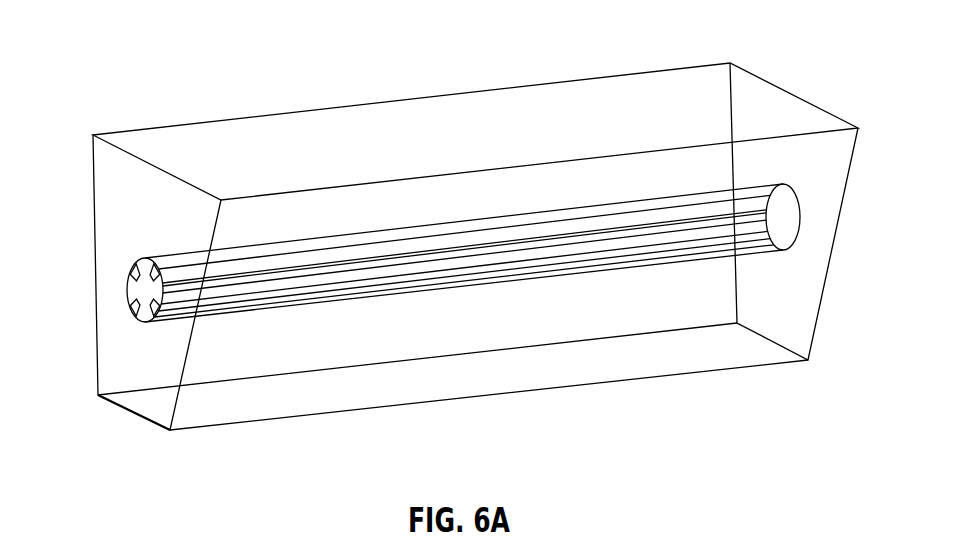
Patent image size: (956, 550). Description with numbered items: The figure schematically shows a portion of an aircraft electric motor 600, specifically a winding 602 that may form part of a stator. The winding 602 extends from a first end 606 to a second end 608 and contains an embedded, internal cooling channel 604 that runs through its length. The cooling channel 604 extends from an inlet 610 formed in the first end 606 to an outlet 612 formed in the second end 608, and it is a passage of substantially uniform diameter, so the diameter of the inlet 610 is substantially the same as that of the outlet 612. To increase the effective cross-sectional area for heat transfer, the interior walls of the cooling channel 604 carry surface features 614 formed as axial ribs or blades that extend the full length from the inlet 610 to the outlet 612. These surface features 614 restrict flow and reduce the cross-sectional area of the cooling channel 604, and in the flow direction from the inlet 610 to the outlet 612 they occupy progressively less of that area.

The aircraft electric motor 600 is at (145, 43).
The winding 602 is at (515, 104).
The cooling channel 604 is at (295, 263).
The first end 606 is at (122, 190).
The second end 608 is at (785, 92).
The inlet 610 is at (127, 290).
The outlet 612 is at (801, 217).
The surface features 614 is at (152, 322).